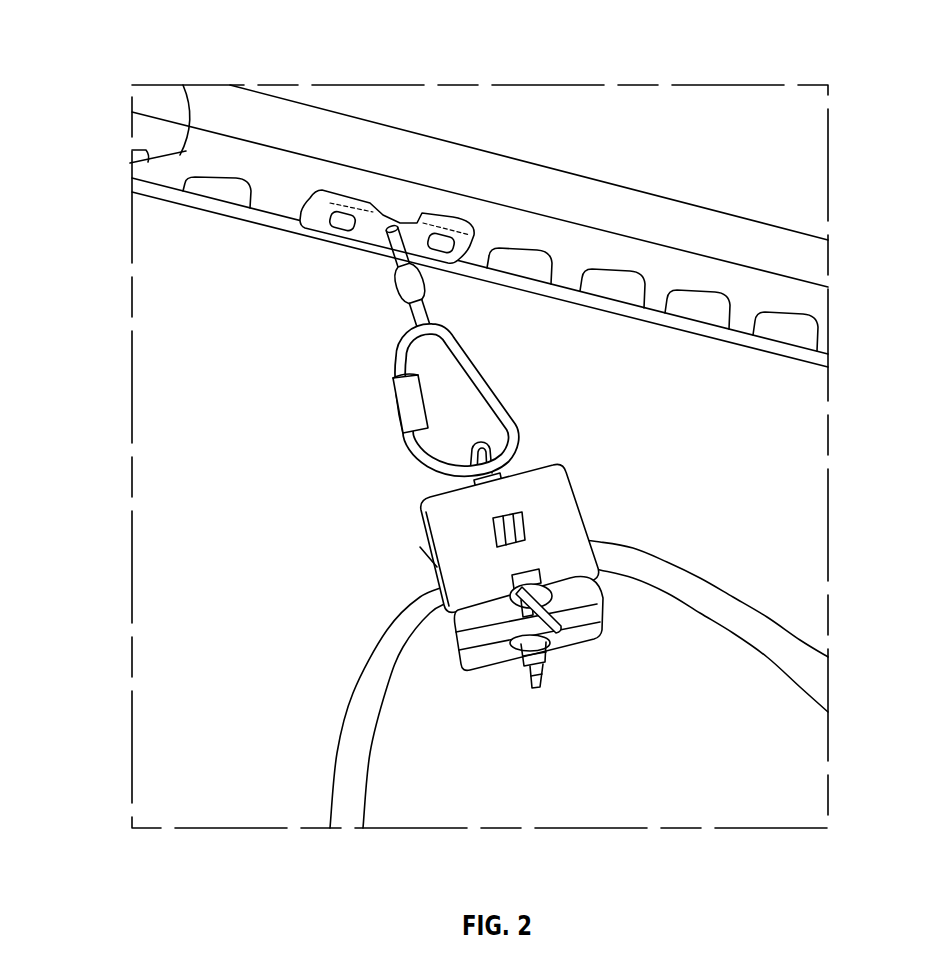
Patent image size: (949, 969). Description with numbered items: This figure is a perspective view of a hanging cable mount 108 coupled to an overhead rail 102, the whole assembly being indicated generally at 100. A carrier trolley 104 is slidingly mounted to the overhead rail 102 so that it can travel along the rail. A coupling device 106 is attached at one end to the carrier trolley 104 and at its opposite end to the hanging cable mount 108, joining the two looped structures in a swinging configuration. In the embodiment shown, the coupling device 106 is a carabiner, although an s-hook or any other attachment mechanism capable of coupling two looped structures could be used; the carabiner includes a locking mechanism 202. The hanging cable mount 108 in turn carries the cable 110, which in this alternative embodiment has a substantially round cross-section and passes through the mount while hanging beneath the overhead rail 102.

The mounting system 100 is at (855, 68).
The overhead rail 102 is at (317, 122).
The carrier trolley 104 is at (370, 223).
The coupling device 106 is at (483, 378).
The hanging cable mount 108 is at (500, 502).
The cable 110 is at (718, 607).
The locking mechanism 202 is at (407, 402).